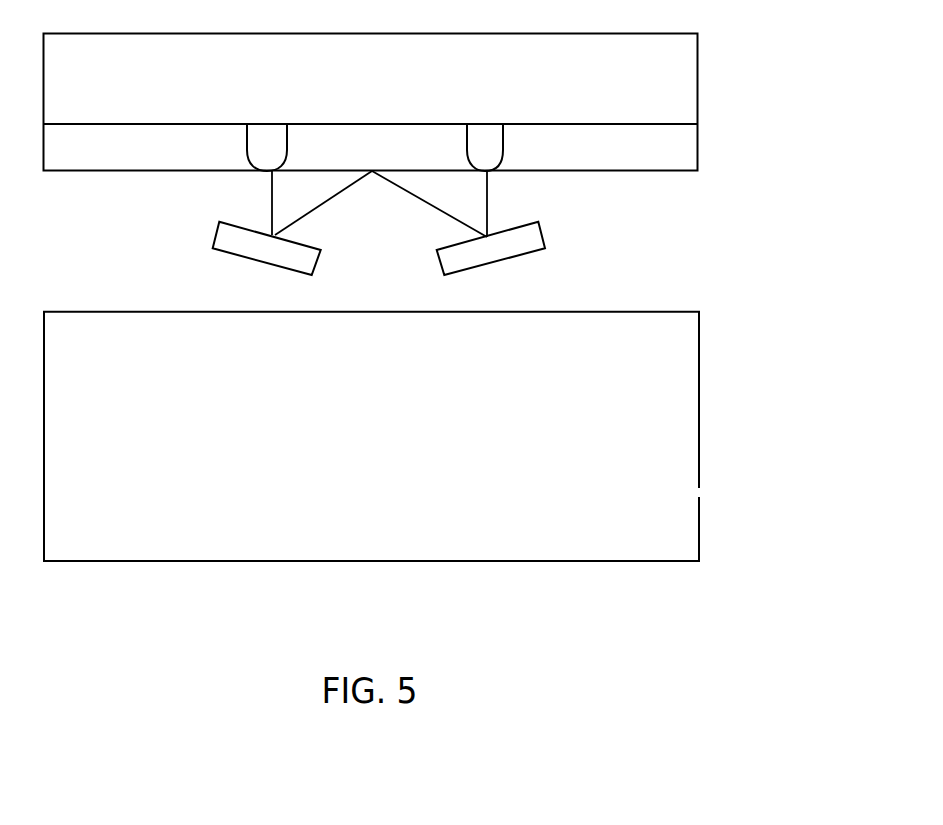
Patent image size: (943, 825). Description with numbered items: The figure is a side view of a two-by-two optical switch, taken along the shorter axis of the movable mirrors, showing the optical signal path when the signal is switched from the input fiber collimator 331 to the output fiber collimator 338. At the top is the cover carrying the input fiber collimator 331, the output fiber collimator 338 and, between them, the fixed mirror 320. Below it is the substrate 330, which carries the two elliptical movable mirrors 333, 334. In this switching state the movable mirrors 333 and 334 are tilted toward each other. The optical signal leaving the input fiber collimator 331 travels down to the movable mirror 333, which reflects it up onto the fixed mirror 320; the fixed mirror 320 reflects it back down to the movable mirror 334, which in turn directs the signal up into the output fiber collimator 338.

The fixed mirror 320 is at (710, 153).
The substrate 330 is at (712, 444).
The input fiber collimator 331 is at (262, 153).
The output fiber collimator 338 is at (479, 154).
The movable mirror 333 is at (292, 266).
The movable mirror 334 is at (458, 266).